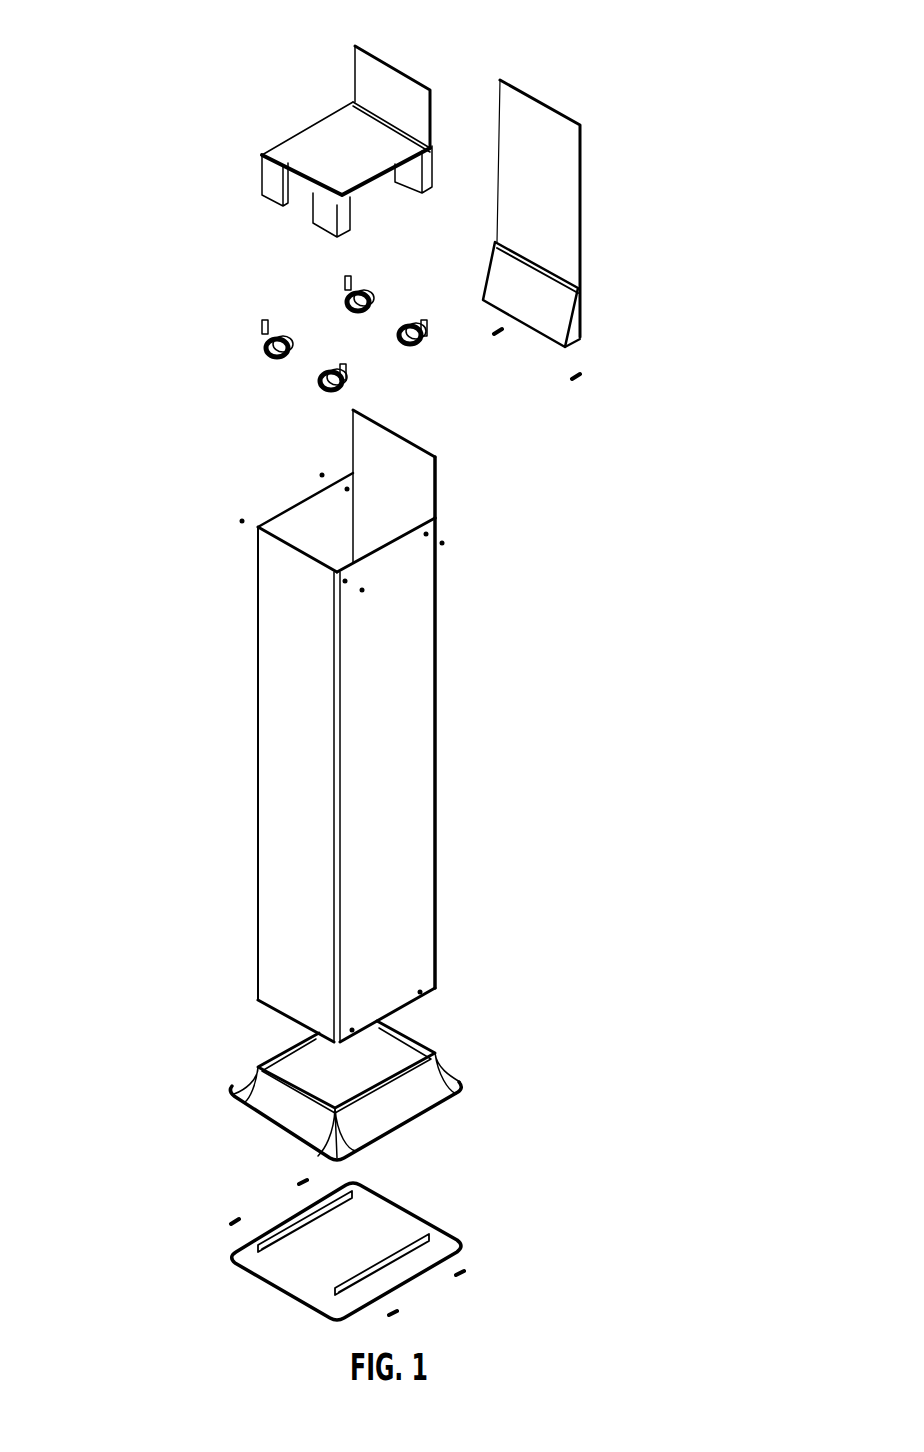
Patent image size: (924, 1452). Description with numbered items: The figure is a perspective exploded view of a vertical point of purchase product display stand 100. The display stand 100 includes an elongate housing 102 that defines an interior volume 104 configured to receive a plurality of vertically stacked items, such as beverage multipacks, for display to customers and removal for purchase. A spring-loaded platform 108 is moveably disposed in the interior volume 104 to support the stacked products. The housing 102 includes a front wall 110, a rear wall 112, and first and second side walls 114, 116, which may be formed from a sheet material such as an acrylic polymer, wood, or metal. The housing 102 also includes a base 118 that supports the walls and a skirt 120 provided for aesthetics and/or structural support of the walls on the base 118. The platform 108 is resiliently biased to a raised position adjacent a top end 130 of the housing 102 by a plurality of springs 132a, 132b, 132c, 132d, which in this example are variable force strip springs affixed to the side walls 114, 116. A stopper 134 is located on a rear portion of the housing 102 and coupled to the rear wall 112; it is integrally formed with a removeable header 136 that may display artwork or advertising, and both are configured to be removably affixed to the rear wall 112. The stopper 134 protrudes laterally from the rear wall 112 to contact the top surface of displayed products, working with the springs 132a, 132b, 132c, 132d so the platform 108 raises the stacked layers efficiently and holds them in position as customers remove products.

The display stand 100 is at (122, 35).
The housing 102 is at (214, 571).
The interior volume 104 is at (362, 404).
The spring-loaded platform 108 is at (327, 137).
The front wall 110 is at (287, 866).
The rear wall 112 is at (447, 605).
The first side wall 114 is at (238, 766).
The second side wall 116 is at (398, 777).
The base 118 is at (297, 1262).
The skirt 120 is at (286, 1110).
The top end 130 is at (449, 471).
The spring 132a is at (265, 345).
The spring 132b is at (345, 298).
The spring 132c is at (322, 388).
The spring 132d is at (418, 320).
The stopper 134 is at (575, 320).
The removeable header 136 is at (582, 124).